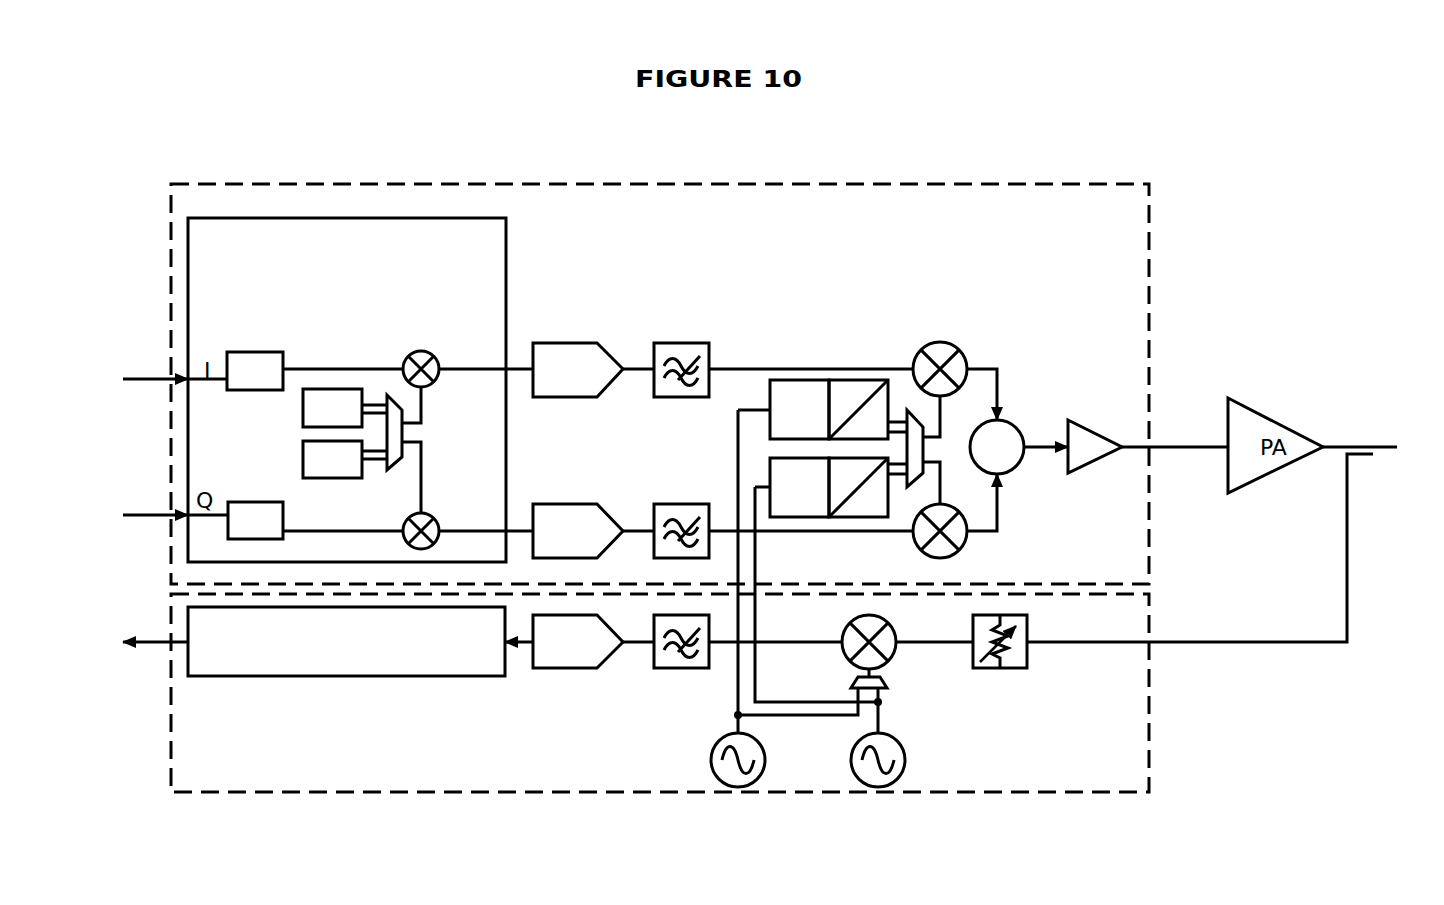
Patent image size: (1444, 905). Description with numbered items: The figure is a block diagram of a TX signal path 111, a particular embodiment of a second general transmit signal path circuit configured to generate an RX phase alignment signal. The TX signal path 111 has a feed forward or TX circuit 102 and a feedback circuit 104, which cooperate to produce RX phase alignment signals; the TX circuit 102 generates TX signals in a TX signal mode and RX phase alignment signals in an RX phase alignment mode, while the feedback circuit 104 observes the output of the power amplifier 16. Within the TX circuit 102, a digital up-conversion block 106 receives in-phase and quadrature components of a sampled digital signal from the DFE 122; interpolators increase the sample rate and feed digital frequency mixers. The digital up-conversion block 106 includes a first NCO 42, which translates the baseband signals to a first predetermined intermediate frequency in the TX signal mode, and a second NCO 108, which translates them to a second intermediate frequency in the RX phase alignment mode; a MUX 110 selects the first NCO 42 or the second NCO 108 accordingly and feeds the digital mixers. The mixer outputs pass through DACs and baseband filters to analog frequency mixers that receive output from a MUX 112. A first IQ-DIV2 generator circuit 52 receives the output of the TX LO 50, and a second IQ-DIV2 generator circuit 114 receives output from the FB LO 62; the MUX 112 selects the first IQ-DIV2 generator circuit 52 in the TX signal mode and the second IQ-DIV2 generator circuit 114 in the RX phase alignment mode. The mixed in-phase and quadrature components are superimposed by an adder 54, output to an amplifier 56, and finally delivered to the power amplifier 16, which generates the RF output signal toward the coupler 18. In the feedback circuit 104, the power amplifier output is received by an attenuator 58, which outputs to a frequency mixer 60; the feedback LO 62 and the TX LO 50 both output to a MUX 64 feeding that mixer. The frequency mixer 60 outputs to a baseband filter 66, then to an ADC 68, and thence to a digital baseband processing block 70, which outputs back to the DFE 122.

The TX signal path 111 is at (422, 143).
The TX circuit 102 is at (1141, 219).
The feedback circuit 104 is at (218, 782).
The digital up-conversion block 106 is at (501, 256).
The first NCO 42 is at (303, 396).
The second NCO 108 is at (303, 447).
The MUX 110 is at (407, 432).
The first IQ-DIV2 generator circuit 52 is at (828, 380).
The second IQ-DIV2 generator circuit 114 is at (842, 517).
The MUX 112 is at (927, 448).
The adder 54 is at (1010, 425).
The amplifier 56 is at (1087, 425).
The power amplifier 16 is at (1227, 407).
The coupler output 18 is at (1228, 506).
The attenuator 58 is at (1007, 668).
The frequency mixer 60 is at (890, 618).
The MUX 64 is at (887, 678).
The baseband filter 66 is at (668, 668).
The ADC 68 is at (562, 668).
The digital baseband processing block 70 is at (337, 676).
The DFE 122 is at (131, 597).
The TX LO 50 is at (763, 742).
The FB LO 62 is at (900, 743).